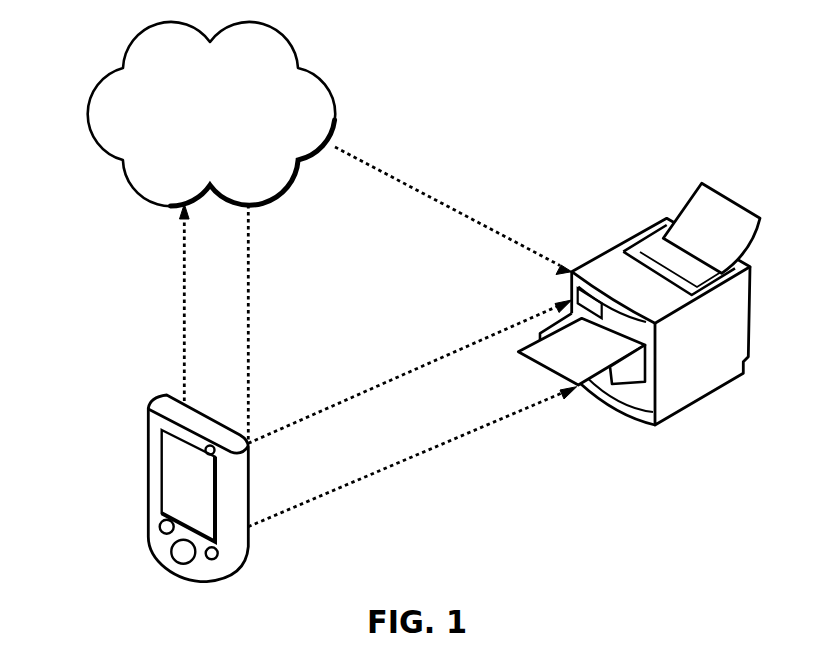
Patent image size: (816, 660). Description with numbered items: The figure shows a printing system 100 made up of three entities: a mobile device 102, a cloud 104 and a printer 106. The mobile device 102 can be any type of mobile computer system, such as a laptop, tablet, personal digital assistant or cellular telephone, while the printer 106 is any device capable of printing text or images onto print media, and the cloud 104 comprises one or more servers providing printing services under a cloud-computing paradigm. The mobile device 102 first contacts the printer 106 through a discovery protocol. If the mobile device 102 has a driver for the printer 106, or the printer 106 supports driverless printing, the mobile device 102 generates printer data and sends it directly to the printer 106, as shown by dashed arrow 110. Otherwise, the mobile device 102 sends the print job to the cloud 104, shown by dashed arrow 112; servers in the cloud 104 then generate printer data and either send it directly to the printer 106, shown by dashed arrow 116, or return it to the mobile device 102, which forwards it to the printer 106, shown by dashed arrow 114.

The printing system 100 is at (472, 123).
The mobile device 102 is at (144, 488).
The cloud 104 is at (212, 114).
The printer 106 is at (639, 330).
The dashed arrow 110 is at (412, 457).
The dashed arrow 112 is at (163, 302).
The dashed arrow 114 is at (409, 324).
The dashed arrow 116 is at (453, 211).